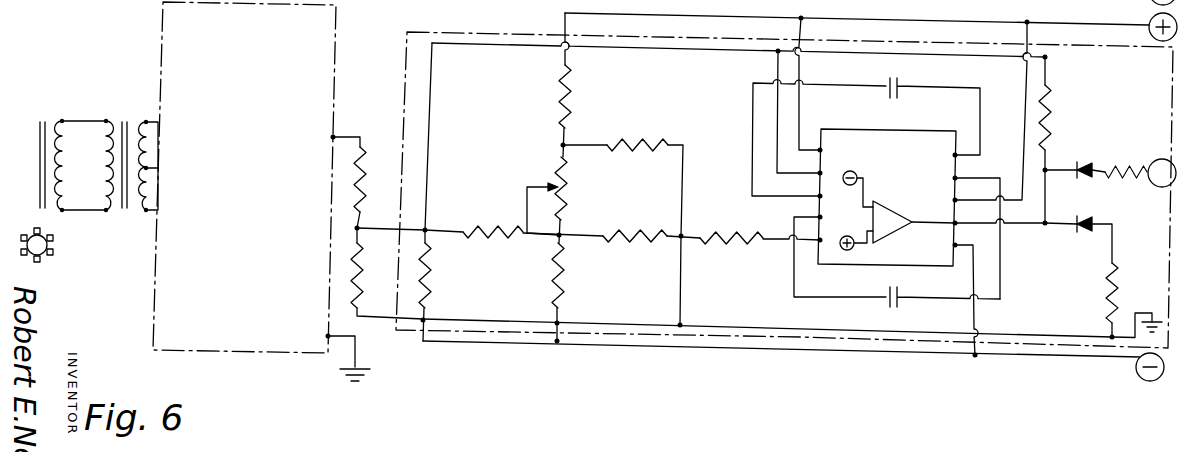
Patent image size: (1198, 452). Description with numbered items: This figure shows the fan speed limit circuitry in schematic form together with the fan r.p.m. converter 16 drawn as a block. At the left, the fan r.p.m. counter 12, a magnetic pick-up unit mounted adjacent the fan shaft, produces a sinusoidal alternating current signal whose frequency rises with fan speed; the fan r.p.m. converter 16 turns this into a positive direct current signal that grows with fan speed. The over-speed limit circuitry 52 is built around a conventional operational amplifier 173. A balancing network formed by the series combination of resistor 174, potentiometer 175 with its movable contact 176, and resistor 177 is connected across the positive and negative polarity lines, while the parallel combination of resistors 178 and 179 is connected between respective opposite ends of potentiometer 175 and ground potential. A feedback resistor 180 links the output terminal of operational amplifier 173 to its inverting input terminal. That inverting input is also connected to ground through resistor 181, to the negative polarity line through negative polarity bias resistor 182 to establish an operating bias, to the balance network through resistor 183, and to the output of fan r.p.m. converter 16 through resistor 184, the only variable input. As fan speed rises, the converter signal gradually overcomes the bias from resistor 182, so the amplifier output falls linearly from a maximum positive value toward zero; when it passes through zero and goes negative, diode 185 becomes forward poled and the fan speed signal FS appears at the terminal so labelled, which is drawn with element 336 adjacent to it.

The fan r.p.m. counter 12 is at (54, 224).
The fan r.p.m. converter 16 is at (340, 80).
The over-speed limit circuitry 52 is at (402, 30).
The operational amplifier 173 is at (888, 140).
The resistor 174 is at (566, 100).
The potentiometer 175 is at (567, 188).
The movable contact 176 is at (543, 185).
The resistor 177 is at (562, 287).
The resistor 178 is at (647, 141).
The resistor 179 is at (637, 233).
The feedback resistor 180 is at (1052, 108).
The resistor 181 is at (353, 293).
The negative polarity bias resistor 182 is at (429, 287).
The resistor 183 is at (478, 228).
The resistor 184 is at (362, 147).
The diode 185 is at (1083, 169).
The fan speed sensor resistor 336 is at (1112, 178).